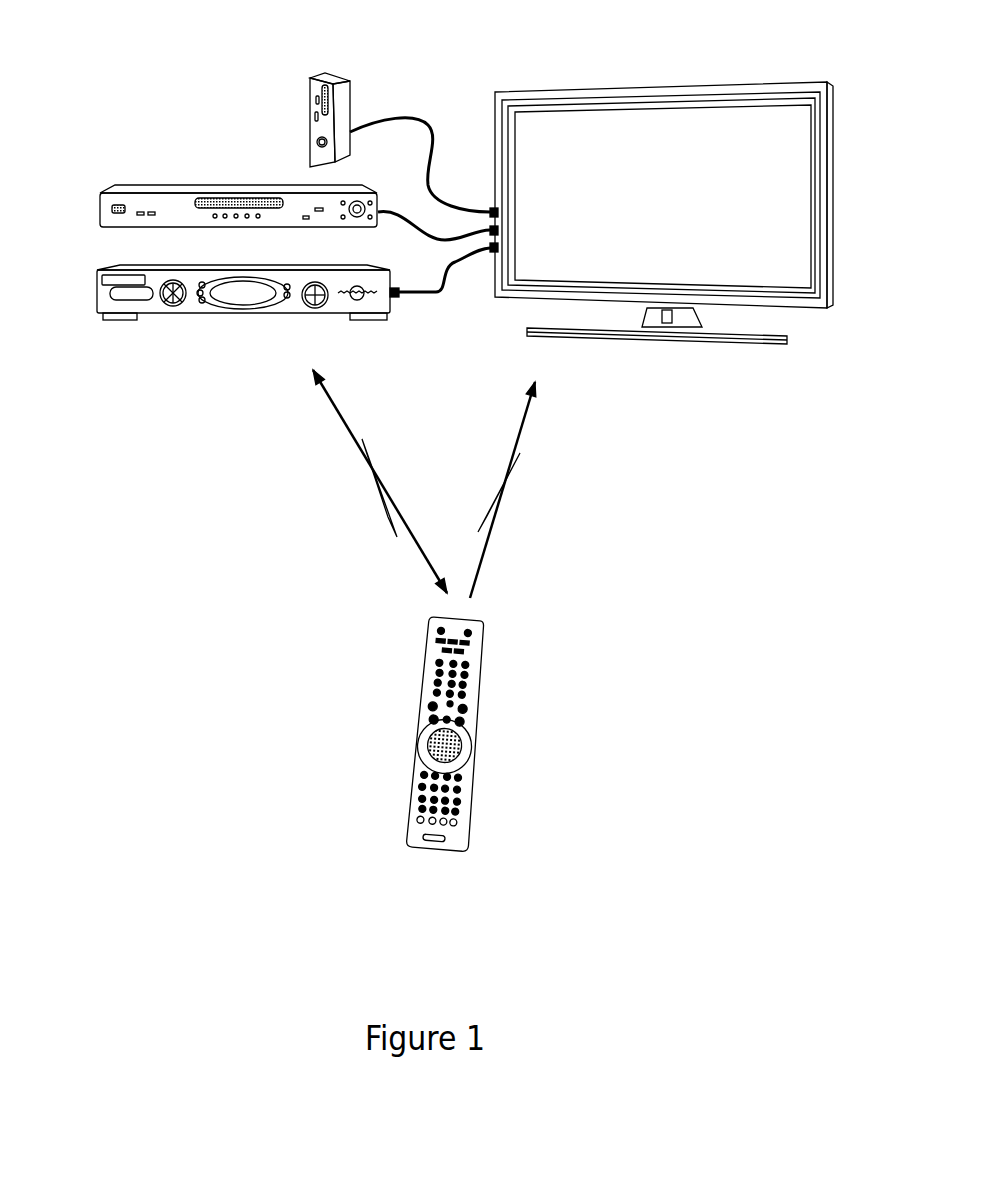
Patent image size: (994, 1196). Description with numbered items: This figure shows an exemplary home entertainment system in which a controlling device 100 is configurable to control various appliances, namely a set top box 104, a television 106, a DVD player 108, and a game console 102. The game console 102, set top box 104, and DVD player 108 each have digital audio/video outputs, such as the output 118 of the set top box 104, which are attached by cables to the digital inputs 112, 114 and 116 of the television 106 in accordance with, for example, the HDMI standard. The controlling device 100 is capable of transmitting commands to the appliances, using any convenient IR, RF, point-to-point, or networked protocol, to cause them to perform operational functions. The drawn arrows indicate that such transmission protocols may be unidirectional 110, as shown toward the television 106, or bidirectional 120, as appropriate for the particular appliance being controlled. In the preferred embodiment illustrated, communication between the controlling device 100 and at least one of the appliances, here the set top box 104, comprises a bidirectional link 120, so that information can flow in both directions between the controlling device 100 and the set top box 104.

The controlling device 100 is at (465, 813).
The game console 102 is at (325, 75).
The set top box 104 is at (163, 320).
The television 106 is at (580, 90).
The DVD player 108 is at (148, 185).
The unidirectional transmission protocol 110 is at (532, 473).
The digital input 112 is at (491, 208).
The digital input 114 is at (491, 253).
The digital input 116 is at (505, 228).
The output 118 is at (398, 299).
The bidirectional link 120 is at (337, 455).